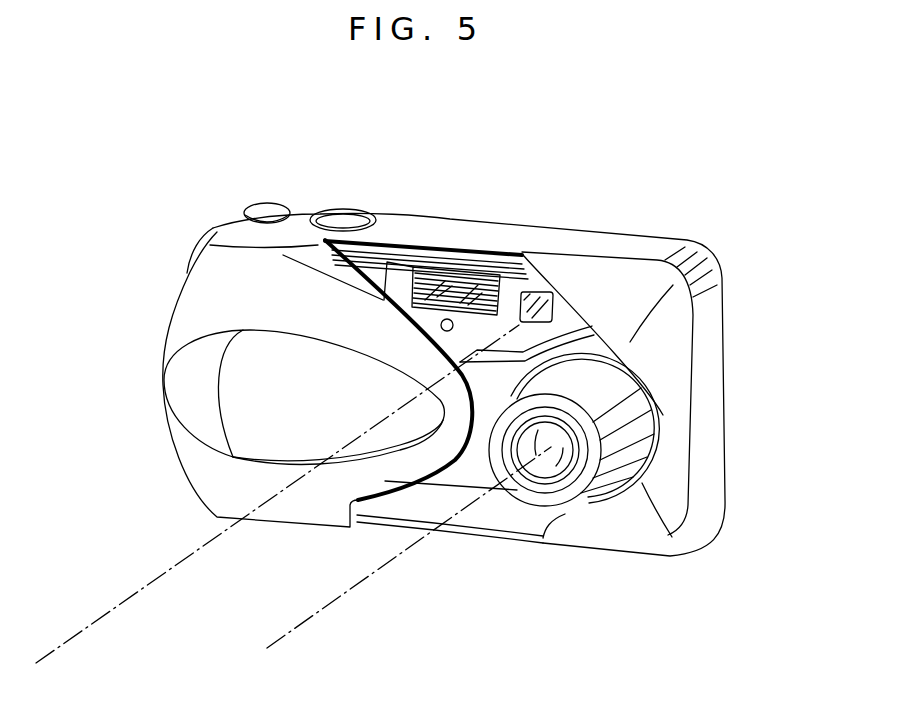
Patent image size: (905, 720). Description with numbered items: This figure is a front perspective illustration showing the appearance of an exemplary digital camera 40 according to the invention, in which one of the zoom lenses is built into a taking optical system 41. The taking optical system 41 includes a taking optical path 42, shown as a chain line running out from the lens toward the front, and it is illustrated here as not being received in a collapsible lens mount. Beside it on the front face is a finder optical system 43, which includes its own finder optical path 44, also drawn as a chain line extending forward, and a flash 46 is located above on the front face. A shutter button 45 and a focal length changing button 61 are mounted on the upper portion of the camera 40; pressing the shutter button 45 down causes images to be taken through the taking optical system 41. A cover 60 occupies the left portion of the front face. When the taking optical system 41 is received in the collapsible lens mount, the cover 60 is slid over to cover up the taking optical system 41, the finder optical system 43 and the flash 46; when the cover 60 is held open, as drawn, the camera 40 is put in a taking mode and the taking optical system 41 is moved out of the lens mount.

The digital camera 40 is at (160, 264).
The taking optical system 41 is at (540, 467).
The taking optical path 42 is at (315, 617).
The finder optical system 43 is at (543, 298).
The finder optical path 44 is at (50, 654).
The shutter button 45 is at (348, 217).
The flash 46 is at (467, 287).
The cover 60 is at (262, 436).
The focal length changing button 61 is at (266, 207).